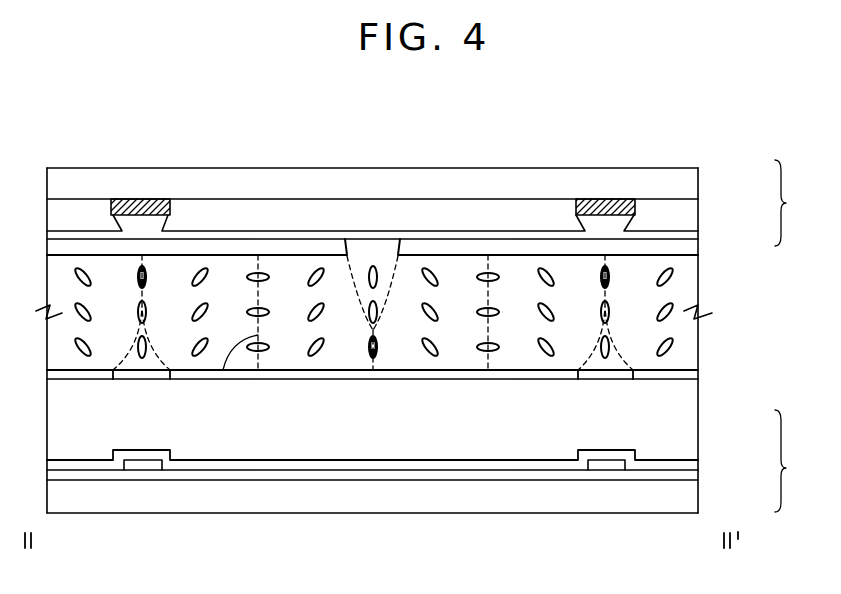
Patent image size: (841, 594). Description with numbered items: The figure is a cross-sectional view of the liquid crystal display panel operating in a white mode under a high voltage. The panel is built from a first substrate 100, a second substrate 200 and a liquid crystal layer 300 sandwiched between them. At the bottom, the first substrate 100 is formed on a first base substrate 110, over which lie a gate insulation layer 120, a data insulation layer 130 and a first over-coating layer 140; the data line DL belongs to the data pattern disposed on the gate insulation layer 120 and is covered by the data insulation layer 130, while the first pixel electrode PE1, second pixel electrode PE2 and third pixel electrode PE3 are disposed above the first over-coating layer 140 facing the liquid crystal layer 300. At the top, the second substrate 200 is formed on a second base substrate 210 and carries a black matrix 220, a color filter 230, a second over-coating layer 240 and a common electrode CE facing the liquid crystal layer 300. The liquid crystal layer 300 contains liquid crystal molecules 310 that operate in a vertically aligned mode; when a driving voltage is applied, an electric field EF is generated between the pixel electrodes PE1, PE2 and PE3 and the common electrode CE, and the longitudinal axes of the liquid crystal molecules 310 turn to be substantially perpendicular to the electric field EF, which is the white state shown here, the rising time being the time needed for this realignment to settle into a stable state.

The first substrate 100 is at (797, 461).
The first base substrate 110 is at (698, 504).
The gate insulation layer 120 is at (698, 478).
The data insulation layer 130 is at (698, 462).
The first over-coating layer 140 is at (698, 427).
The second substrate 200 is at (797, 203).
The second base substrate 210 is at (698, 181).
The black matrix 220 is at (622, 199).
The color filter 230 is at (698, 214).
The second over-coating layer 240 is at (698, 236).
The common electrode CE is at (698, 251).
The liquid crystal layer 300 is at (698, 292).
The liquid crystal molecule 310 is at (670, 344).
The first pixel electrode PE1 is at (83, 372).
The second pixel electrode PE2 is at (370, 373).
The third pixel electrode PE3 is at (665, 378).
The data line DL is at (612, 552).
The electric field (fringe field) EF is at (223, 378).